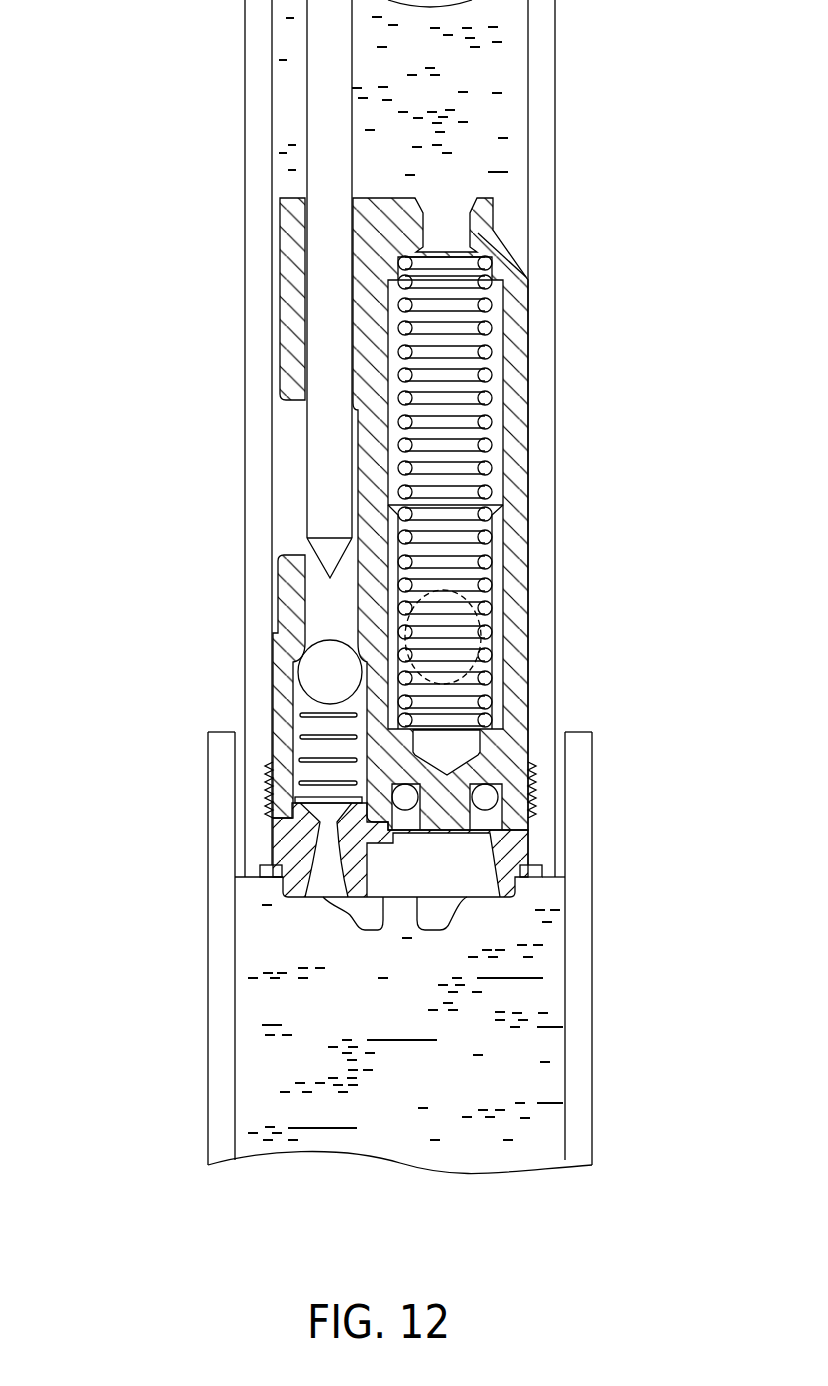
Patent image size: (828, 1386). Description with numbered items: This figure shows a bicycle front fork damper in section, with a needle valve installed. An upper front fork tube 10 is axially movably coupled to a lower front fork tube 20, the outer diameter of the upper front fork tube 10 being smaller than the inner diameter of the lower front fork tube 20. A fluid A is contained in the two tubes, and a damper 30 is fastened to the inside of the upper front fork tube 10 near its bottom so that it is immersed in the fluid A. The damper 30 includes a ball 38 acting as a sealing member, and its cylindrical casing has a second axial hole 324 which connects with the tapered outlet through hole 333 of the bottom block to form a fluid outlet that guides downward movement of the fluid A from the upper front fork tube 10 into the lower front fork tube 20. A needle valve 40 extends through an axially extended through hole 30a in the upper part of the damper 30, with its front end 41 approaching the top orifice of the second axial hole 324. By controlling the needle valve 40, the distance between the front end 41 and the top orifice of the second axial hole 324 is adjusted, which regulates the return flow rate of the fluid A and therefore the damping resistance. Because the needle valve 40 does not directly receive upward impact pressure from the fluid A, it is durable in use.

The upper front fork tube 10 is at (555, 400).
The lower front fork tube 20 is at (595, 1008).
The damper 30 is at (505, 240).
The axially extended through hole 30a is at (285, 290).
The needle valve 40 is at (303, 121).
The front end 41 is at (332, 540).
The second axial hole 324 is at (315, 610).
The ball 38 is at (325, 677).
The outlet through hole 333 is at (327, 875).
The fluid A is at (502, 123).